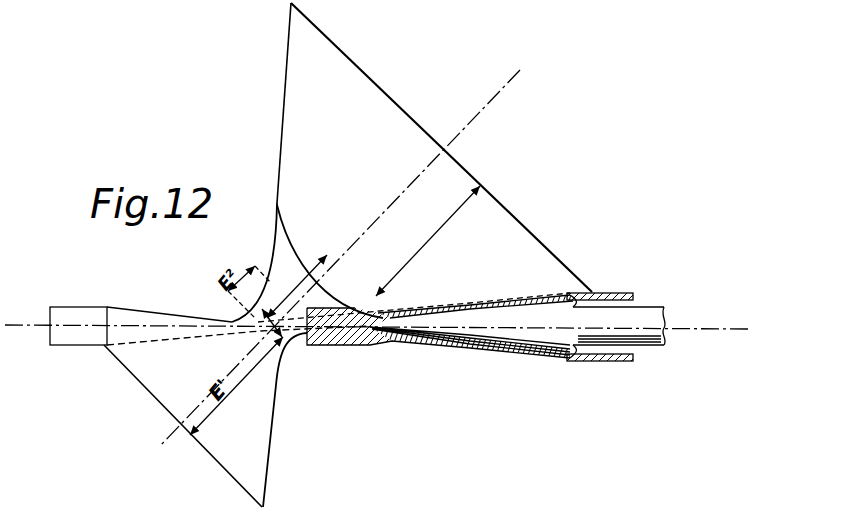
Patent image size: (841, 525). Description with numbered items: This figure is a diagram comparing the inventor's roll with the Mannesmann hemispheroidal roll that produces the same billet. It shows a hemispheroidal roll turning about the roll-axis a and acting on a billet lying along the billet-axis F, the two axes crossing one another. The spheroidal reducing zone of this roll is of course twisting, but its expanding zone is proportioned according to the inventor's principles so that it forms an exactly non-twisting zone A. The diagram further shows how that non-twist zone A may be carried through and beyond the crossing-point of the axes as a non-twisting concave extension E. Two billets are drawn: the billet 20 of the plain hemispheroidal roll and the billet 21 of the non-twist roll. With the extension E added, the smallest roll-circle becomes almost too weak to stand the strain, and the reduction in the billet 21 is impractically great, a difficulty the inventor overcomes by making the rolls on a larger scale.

The billet of the hemispheroidal roll 20 is at (345, 343).
The billet of the non-twist roll 21 is at (158, 318).
The non-twist zone A is at (428, 241).
The non-twisting concave extension E is at (297, 286).
The billet-axis F is at (388, 332).
The roll-axis a is at (346, 250).